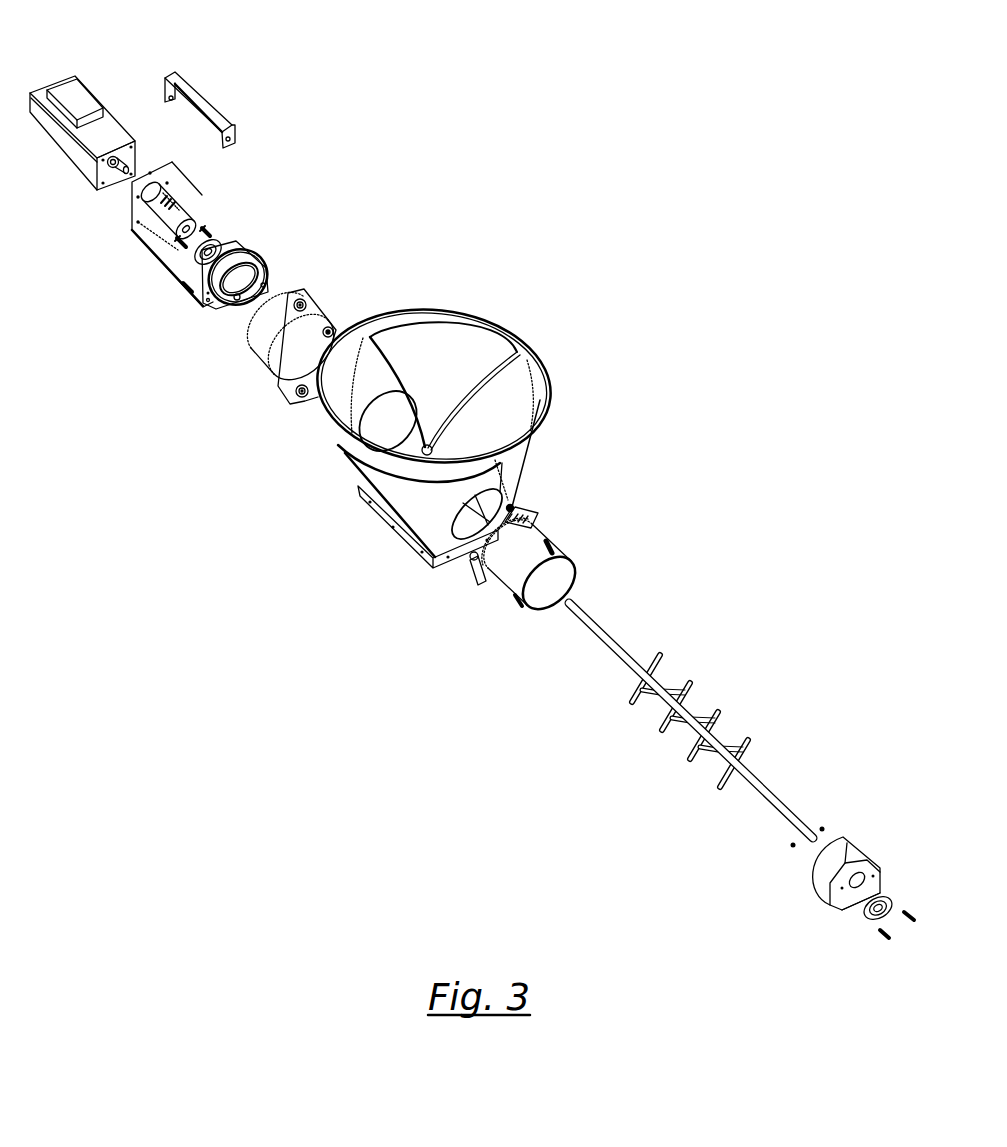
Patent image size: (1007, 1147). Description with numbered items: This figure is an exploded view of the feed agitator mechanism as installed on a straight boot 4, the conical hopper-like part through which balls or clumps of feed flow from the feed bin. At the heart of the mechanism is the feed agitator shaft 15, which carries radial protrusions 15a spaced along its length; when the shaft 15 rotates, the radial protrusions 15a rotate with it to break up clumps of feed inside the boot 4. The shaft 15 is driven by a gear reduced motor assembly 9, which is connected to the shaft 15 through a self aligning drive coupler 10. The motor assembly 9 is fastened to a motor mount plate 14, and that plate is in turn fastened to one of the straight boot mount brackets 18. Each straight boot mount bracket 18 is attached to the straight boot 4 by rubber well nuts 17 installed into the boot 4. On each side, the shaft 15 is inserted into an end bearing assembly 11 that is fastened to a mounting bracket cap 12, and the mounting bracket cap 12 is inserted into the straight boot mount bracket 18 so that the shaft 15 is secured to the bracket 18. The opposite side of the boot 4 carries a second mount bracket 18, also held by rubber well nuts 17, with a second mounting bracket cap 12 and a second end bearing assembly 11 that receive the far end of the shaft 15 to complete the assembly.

The straight boot 4 is at (410, 537).
The gear reduced motor assembly 9 is at (108, 133).
The self aligning drive coupler 10 is at (203, 235).
The end bearing assembly 11 is at (187, 292).
The mounting bracket cap 12 is at (266, 268).
The motor mount plate 14 is at (148, 250).
The feed agitator shaft 15 is at (612, 633).
The radial protrusions 15a is at (720, 720).
The rubber well nuts 17 is at (334, 333).
The straight boot mount bracket 18 is at (290, 370).